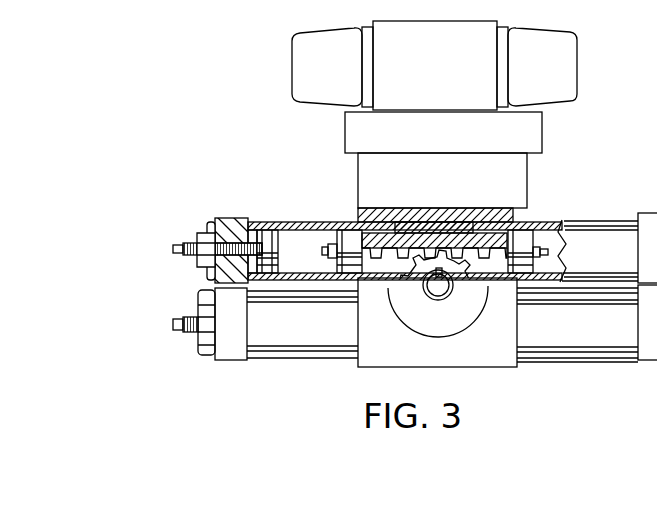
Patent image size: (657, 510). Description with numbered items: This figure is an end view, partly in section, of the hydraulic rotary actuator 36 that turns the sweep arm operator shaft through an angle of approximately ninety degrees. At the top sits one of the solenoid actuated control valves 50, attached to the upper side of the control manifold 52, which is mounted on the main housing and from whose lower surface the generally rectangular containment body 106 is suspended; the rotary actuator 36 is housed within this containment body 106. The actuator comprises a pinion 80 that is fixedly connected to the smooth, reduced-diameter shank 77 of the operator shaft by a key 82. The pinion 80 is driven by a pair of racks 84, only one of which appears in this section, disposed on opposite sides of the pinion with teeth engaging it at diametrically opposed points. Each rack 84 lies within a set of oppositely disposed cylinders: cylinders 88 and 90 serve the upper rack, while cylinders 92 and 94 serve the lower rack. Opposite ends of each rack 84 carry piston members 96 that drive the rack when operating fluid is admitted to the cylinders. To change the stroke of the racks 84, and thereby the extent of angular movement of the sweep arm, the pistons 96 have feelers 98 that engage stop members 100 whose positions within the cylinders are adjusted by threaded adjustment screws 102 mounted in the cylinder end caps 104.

The rotary actuator 36 is at (354, 365).
The solenoid actuated control valve 50 is at (437, 20).
The control manifold 52 is at (527, 175).
The shank 77 is at (438, 292).
The pinion 80 is at (458, 283).
The key 82 is at (432, 291).
The rack 84 is at (510, 242).
The cylinder 88 is at (602, 240).
The cylinder 90 is at (277, 222).
The cylinder 92 is at (285, 332).
The cylinder 94 is at (595, 333).
The piston member 96 is at (352, 233).
The feeler 98 is at (332, 247).
The stop member 100 is at (270, 233).
The threaded adjustment screw 102 is at (180, 257).
The cylinder end cap 104 is at (228, 218).
The containment body 106 is at (505, 365).